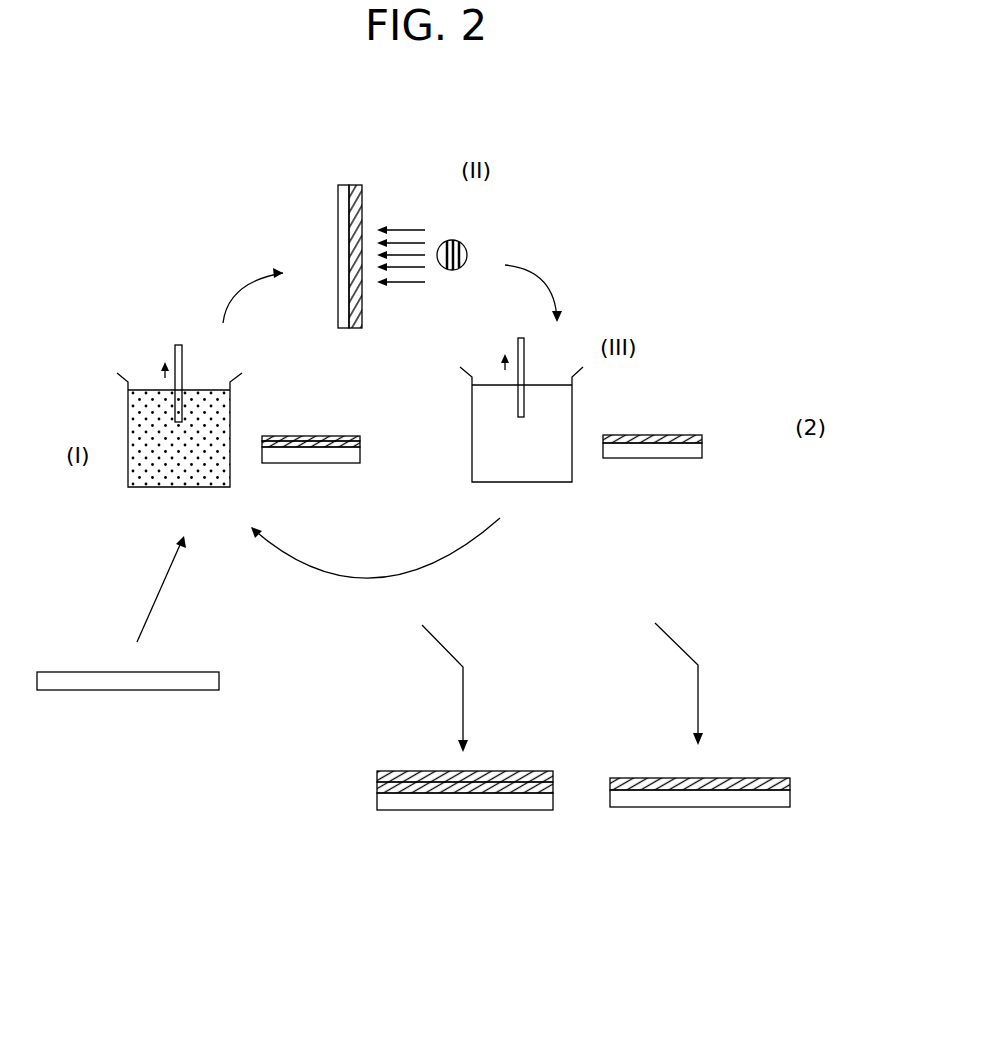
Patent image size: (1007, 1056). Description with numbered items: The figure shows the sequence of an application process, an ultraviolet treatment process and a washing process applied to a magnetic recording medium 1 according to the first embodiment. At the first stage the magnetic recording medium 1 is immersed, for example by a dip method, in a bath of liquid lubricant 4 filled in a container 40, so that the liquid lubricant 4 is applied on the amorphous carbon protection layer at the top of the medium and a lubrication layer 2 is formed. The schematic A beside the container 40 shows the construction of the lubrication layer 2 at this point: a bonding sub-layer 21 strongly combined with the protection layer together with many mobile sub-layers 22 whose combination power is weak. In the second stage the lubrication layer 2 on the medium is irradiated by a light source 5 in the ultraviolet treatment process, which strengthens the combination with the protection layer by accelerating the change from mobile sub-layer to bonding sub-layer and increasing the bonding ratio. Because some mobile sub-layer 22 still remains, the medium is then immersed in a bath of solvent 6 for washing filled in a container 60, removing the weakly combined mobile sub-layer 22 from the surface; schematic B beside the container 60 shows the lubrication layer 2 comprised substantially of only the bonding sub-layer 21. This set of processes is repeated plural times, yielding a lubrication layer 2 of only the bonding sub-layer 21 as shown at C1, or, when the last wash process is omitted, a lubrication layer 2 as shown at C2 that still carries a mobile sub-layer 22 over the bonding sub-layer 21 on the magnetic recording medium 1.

The magnetic recording medium 1 is at (342, 183).
The lubrication layer 2 is at (353, 185).
The liquid lubricant 4 is at (223, 422).
The container 40 is at (232, 481).
The light source 5 is at (468, 252).
The solvent 6 is at (557, 410).
The container 60 is at (572, 472).
The bonding sub-layer 21 is at (360, 445).
The mobile sub-layer 22 is at (360, 437).
The construction of the lubrication layer after application A is at (317, 435).
The construction of the lubrication layer after washing B is at (668, 435).
The lubrication layer after repeated processes C1 is at (737, 775).
The lubrication layer with last wash omitted C2 is at (517, 770).